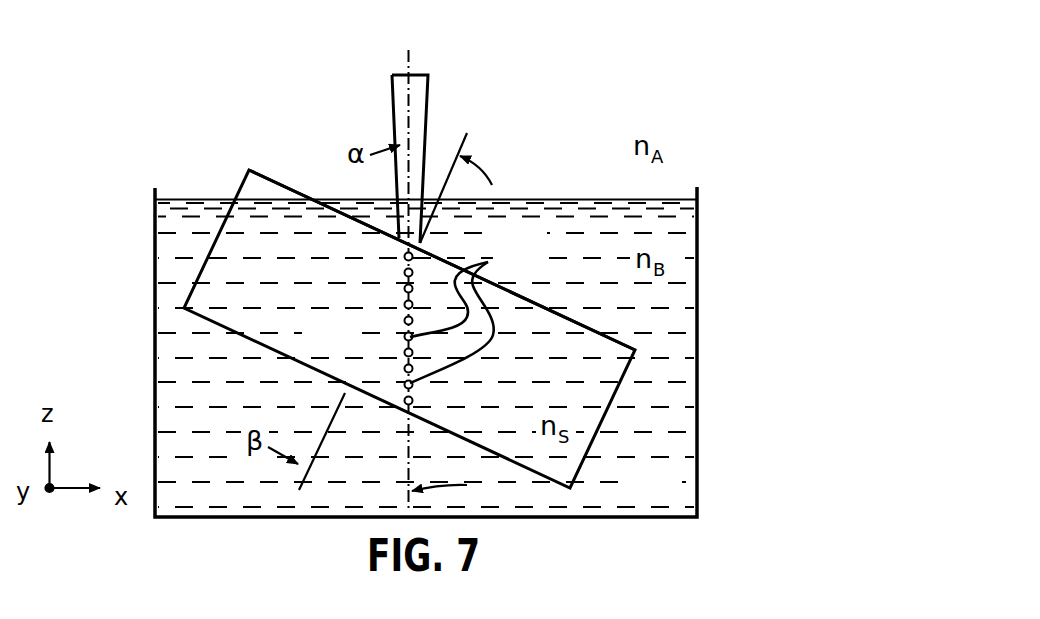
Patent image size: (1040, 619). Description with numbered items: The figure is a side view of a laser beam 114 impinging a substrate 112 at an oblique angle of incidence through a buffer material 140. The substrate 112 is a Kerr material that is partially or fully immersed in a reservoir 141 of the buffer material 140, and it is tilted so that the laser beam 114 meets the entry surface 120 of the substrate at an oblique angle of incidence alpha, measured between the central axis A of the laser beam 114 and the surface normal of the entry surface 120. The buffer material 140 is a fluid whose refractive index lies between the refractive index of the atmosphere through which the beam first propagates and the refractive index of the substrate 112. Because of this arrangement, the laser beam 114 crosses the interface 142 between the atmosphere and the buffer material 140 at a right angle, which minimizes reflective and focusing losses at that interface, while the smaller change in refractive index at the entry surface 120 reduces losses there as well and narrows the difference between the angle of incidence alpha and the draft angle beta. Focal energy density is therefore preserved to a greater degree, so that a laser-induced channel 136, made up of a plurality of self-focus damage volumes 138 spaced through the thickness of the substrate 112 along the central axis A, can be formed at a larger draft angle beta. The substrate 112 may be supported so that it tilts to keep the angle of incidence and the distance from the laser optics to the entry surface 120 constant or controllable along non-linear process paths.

The substrate 112 is at (615, 400).
The laser beam 114 is at (429, 124).
The entry surface 120 is at (287, 187).
The laser-induced channel 136 is at (393, 261).
The self-focus damage volumes 138 is at (479, 308).
The buffer material 140 is at (183, 213).
The reservoir 141 is at (695, 492).
The interface 142 is at (637, 200).
The central axis A is at (429, 79).